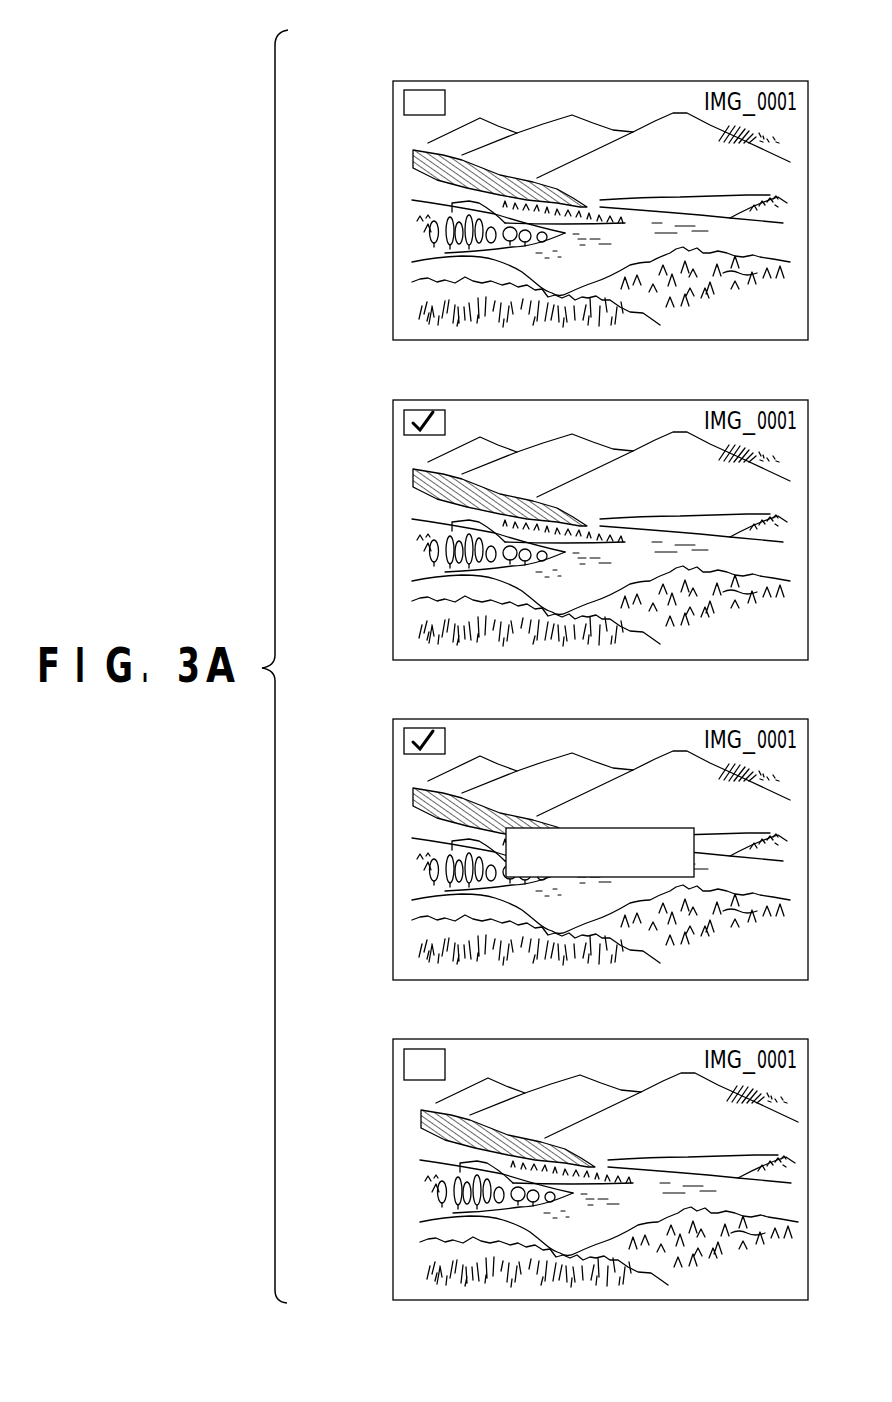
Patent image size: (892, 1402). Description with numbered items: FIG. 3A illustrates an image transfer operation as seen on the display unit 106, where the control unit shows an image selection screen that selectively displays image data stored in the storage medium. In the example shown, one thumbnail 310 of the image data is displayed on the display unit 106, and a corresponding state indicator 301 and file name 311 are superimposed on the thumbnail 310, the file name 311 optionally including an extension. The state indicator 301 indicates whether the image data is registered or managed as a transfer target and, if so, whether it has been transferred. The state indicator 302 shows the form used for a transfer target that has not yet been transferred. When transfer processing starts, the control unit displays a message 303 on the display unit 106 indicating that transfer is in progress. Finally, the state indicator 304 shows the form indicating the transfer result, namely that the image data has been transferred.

The display unit 106 is at (381, 130).
The state indicator 301 is at (422, 88).
The state indicator 302 is at (422, 409).
The message 303 is at (597, 828).
The state indicator 304 is at (422, 1048).
The thumbnail 310 is at (723, 298).
The file name 311 is at (732, 86).